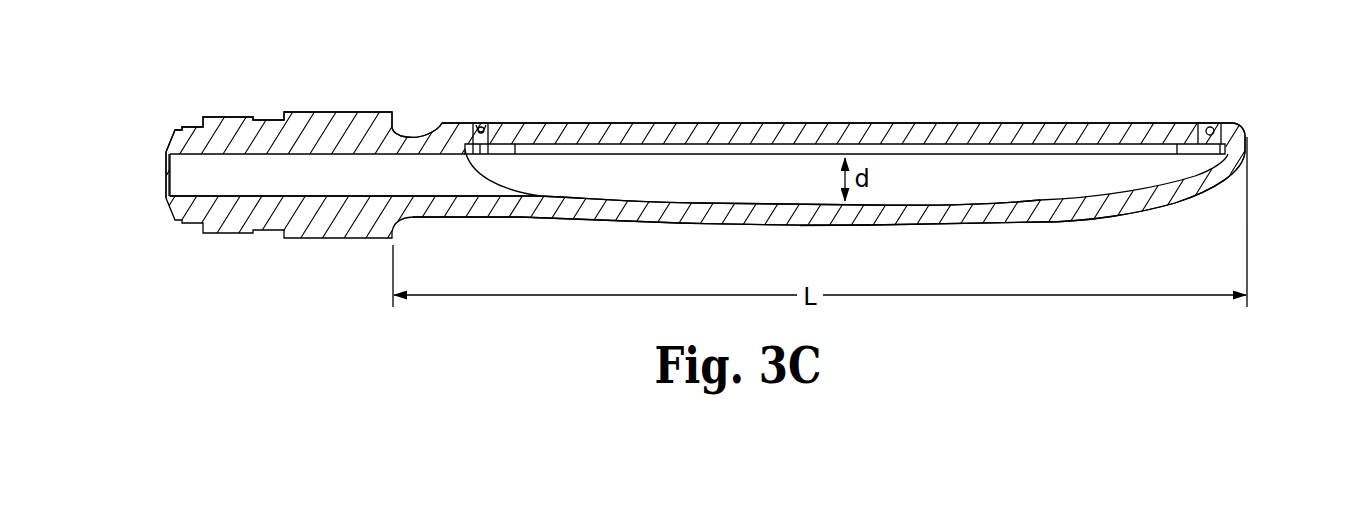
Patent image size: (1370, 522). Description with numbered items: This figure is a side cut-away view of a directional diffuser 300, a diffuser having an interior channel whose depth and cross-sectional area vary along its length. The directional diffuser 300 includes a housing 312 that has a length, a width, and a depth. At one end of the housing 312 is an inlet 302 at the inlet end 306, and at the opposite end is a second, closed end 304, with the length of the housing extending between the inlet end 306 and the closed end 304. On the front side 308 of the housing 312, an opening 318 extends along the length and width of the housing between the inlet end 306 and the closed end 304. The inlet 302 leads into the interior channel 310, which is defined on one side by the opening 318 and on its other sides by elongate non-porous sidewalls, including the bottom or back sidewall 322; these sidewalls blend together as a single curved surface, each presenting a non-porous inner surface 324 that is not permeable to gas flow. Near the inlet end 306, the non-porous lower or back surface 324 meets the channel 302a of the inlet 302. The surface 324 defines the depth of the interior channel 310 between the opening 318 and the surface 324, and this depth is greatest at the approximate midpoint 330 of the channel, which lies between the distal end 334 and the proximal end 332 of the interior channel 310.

The directional diffuser 300 is at (1217, 72).
The inlet 302 is at (165, 152).
The channel of inlet 302a is at (281, 173).
The closed end 304 is at (1253, 117).
The inlet end 306 is at (338, 82).
The front side 308 is at (1090, 122).
The interior channel 310 is at (636, 178).
The housing 312 is at (1247, 153).
The opening 318 is at (1042, 100).
The bottom or back sidewall 322 is at (1065, 222).
The non-porous inner surface 324 is at (717, 196).
The midpoint of channel 330 is at (845, 232).
The proximal end of channel 332 is at (472, 100).
The distal end of channel 334 is at (1233, 200).